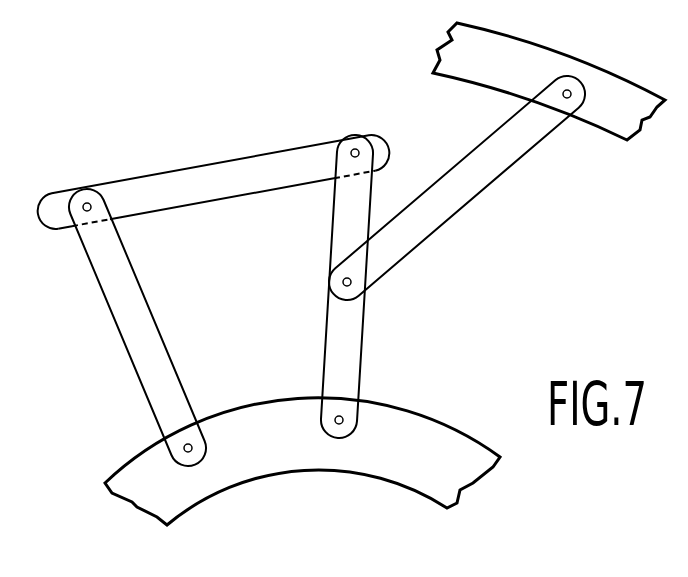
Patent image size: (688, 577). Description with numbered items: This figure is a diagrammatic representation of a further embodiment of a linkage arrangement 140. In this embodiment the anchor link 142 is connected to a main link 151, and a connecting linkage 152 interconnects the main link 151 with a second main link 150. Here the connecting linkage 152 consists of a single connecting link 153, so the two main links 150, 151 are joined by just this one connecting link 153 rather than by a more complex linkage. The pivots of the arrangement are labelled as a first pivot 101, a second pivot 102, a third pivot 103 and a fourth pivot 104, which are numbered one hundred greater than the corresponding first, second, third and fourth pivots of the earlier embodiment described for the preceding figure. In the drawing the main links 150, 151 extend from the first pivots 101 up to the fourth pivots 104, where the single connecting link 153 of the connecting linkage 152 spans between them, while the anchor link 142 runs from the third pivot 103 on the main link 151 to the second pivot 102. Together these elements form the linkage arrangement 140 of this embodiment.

The first pivot 101 is at (190, 446).
The second pivot 102 is at (567, 98).
The third pivot 103 is at (352, 284).
The fourth pivot 104 is at (84, 203).
The linkage arrangement 140 is at (459, 261).
The anchor link 142 is at (447, 200).
The main link 150 is at (143, 300).
The main link 151 is at (365, 340).
The connecting linkage 152 is at (214, 156).
The connecting link 153 is at (217, 187).